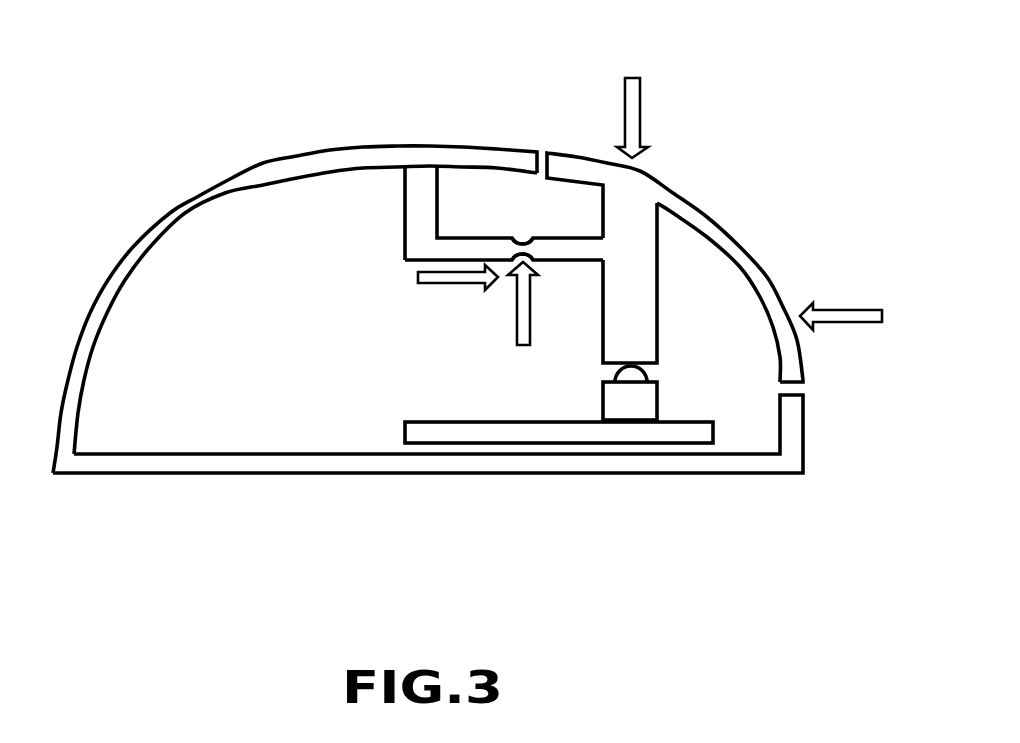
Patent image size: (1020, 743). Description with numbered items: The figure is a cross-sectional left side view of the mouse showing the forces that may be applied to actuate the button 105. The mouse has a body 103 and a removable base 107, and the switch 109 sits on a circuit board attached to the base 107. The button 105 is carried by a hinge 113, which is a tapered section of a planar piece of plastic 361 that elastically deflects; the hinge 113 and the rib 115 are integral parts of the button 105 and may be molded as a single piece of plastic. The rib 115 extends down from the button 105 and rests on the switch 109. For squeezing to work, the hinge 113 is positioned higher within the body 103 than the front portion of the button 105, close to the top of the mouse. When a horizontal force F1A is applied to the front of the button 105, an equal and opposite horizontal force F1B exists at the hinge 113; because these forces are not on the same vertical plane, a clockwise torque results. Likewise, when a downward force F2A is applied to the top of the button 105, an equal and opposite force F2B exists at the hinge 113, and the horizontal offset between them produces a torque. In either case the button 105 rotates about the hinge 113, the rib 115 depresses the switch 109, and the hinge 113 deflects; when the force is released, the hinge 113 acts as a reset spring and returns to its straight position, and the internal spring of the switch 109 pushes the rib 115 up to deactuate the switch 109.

The body 103 is at (187, 197).
The button 105 is at (750, 240).
The base 107 is at (260, 476).
The switch 109 is at (608, 405).
The hinge 113 is at (522, 238).
The rib 115 is at (653, 323).
The planar piece of plastic 361 is at (470, 245).
The horizontal force F1A is at (860, 312).
The horizontal force at hinge F1B is at (438, 283).
The downward force F2A is at (632, 78).
The downward force at hinge F2B is at (525, 345).